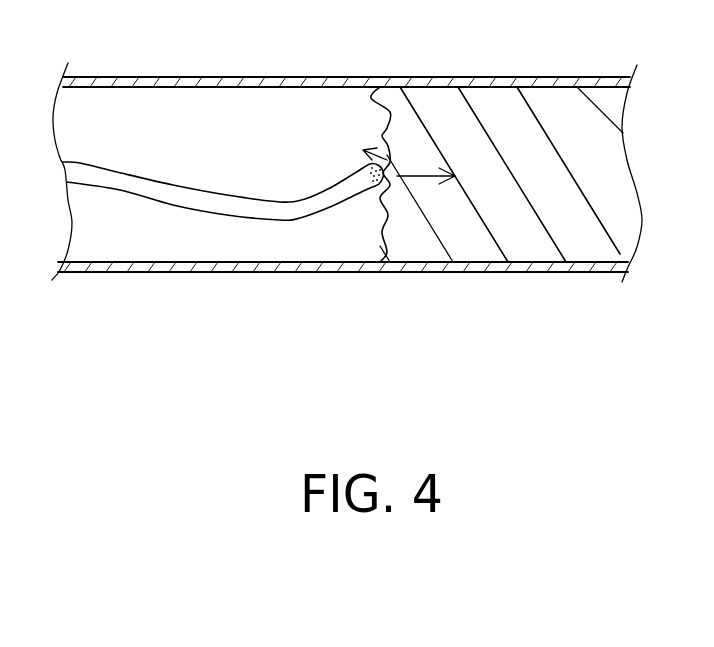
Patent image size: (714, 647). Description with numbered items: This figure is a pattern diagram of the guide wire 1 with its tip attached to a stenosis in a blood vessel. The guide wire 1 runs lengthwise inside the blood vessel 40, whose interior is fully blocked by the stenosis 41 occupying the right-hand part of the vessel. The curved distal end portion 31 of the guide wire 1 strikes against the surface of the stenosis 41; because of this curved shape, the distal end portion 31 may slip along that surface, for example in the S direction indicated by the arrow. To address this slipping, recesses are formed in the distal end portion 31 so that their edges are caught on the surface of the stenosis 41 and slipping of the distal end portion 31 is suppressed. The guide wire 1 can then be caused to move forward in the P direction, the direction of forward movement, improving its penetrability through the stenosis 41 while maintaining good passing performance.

The guide wire 1 is at (117, 166).
The blood vessel 40 is at (267, 77).
The stenosis 41 is at (380, 86).
The distal end portion 31 is at (392, 197).
The S direction S is at (363, 148).
The P direction P is at (436, 176).